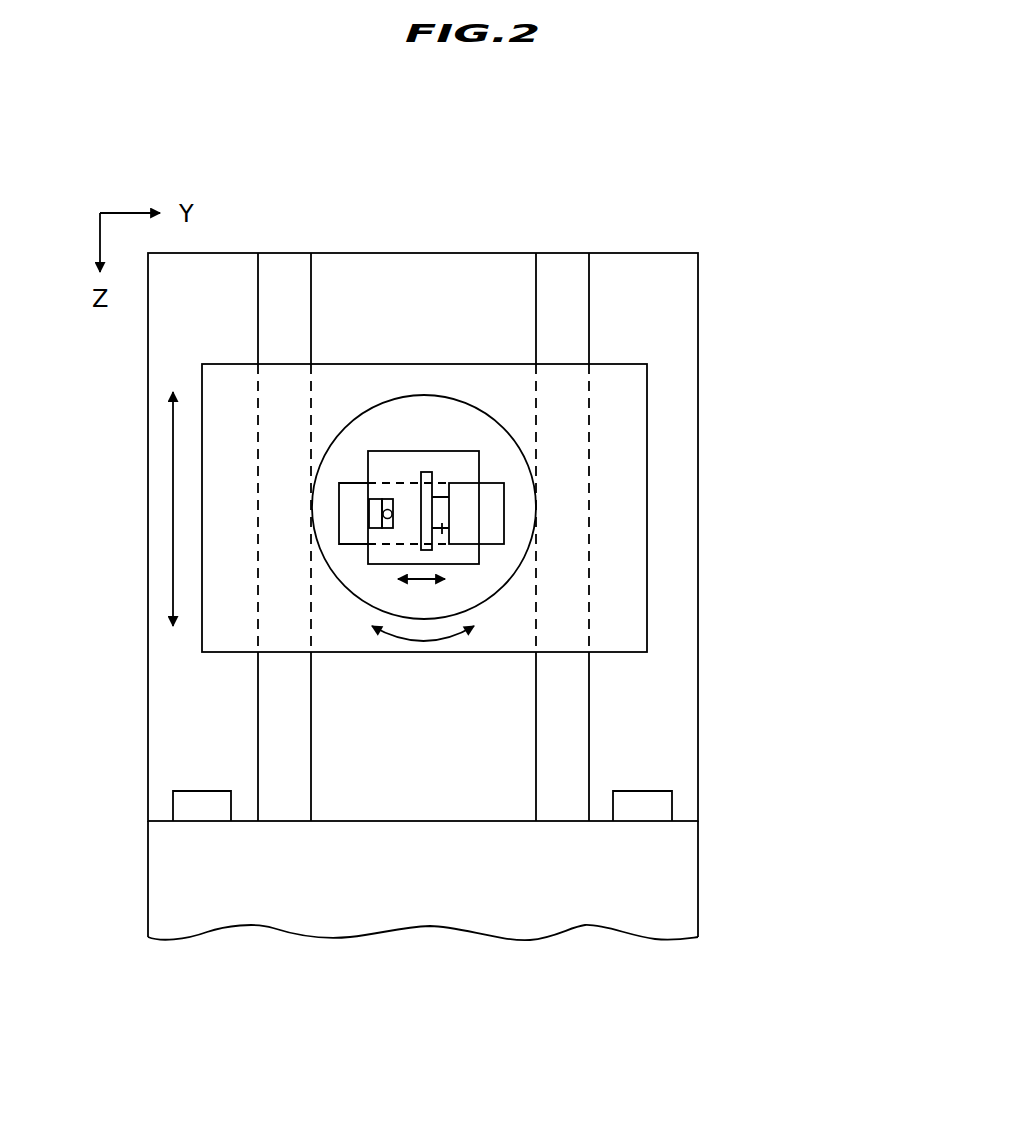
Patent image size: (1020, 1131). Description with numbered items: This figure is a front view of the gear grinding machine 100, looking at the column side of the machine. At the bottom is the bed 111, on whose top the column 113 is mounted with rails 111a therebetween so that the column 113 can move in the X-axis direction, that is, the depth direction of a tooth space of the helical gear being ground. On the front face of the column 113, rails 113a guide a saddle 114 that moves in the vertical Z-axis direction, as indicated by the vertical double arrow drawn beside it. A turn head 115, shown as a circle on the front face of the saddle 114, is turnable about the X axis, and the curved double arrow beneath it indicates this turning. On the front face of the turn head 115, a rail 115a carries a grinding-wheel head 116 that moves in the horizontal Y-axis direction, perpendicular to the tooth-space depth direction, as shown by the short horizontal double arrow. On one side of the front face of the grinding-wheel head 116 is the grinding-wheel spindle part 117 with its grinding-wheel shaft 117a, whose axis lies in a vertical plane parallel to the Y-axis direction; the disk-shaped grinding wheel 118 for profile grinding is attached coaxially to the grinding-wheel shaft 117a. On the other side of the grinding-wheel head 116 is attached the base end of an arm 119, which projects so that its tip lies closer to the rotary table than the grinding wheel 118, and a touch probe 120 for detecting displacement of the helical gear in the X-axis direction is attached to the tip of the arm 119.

The machine tool 100 is at (708, 176).
The bed 111 is at (692, 876).
The rails 111a is at (202, 793).
The column 113 is at (698, 270).
The rails 113a is at (288, 262).
The saddle 114 is at (647, 380).
The turn head 115 is at (493, 417).
The rail 115a is at (505, 483).
The grinding-wheel head 116 is at (479, 452).
The grinding-wheel spindle part 117 is at (463, 535).
The grinding-wheel shaft 117a is at (442, 533).
The grinding wheel 118 is at (427, 548).
The arm 119 is at (380, 498).
The touch probe 120 is at (393, 497).